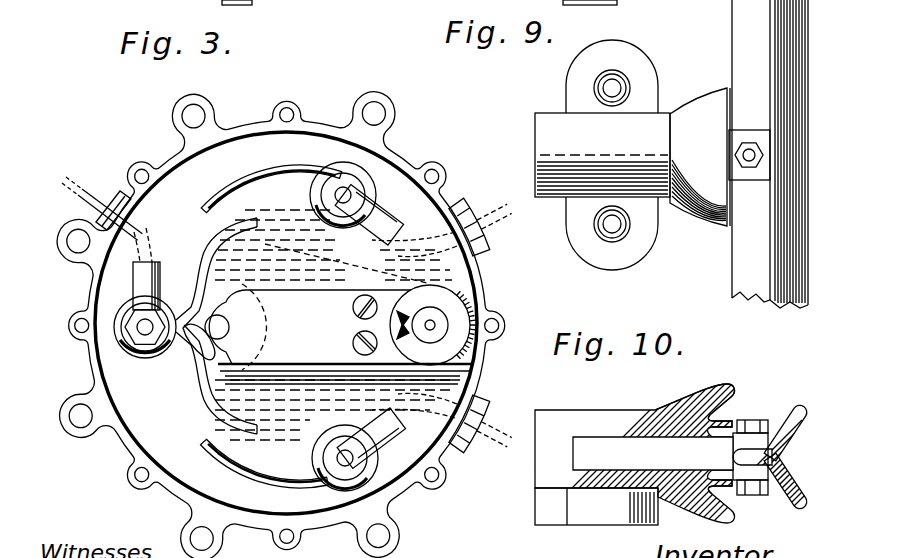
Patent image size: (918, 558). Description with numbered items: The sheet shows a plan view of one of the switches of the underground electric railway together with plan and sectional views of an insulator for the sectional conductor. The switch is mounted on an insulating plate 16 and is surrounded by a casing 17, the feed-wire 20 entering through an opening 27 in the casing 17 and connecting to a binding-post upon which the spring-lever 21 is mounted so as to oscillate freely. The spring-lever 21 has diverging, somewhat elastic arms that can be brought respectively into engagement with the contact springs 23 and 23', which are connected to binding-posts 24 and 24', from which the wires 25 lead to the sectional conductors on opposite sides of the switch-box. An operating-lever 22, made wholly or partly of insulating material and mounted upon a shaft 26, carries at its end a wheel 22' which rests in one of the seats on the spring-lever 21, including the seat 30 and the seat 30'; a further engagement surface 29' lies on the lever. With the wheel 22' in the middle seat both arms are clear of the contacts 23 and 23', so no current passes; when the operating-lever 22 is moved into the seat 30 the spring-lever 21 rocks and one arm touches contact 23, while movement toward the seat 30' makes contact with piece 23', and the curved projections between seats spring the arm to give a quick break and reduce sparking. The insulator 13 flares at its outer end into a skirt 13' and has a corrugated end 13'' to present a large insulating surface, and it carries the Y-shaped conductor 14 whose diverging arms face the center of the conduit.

In FIG. 9, the insulator 13 is at (602, 155).
In FIG. 10, the insulator 13 is at (687, 460).
In FIG. 9, the skirt 13' is at (700, 157).
In FIG. 10, the skirt 13' is at (710, 385).
In FIG. 10, the corrugated end 13'' is at (743, 462).
In FIG. 3, the conductor 14 is at (147, 347).
In FIG. 9, the conductor 14 is at (798, 188).
In FIG. 10, the conductor 14 is at (787, 456).
In FIG. 3, the insulating plate 16 is at (342, 325).
In FIG. 3, the casing 17 is at (482, 291).
In FIG. 3, the feed-wire 20 is at (93, 208).
In FIG. 3, the spring-lever 21 is at (160, 298).
In FIG. 3, the operating-lever 22 is at (276, 327).
In FIG. 3, the wheel 22' is at (223, 318).
In FIG. 3, the contact spring 23 is at (271, 189).
In FIG. 3, the contact spring 23' is at (265, 474).
In FIG. 3, the binding-post 24 is at (342, 203).
In FIG. 3, the binding-post 24' is at (343, 449).
In FIG. 3, the wires 25 is at (480, 212).
In FIG. 3, the shaft 26 is at (431, 322).
In FIG. 3, the opening 27 is at (118, 200).
In FIG. 3, the rib 29' is at (214, 342).
In FIG. 3, the seat 30 is at (212, 272).
In FIG. 3, the seat 30' is at (216, 379).